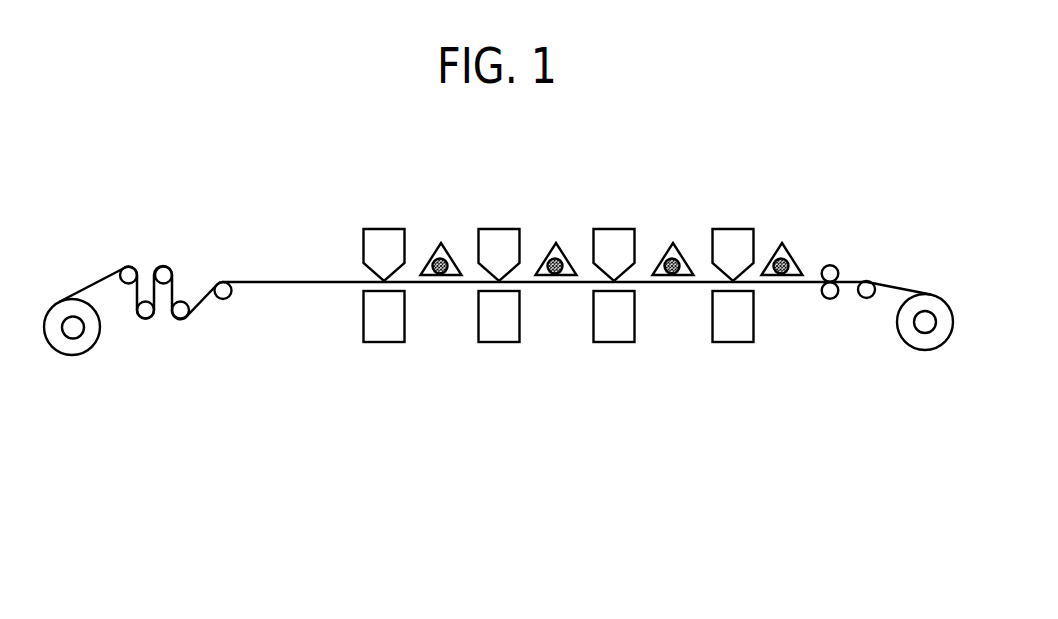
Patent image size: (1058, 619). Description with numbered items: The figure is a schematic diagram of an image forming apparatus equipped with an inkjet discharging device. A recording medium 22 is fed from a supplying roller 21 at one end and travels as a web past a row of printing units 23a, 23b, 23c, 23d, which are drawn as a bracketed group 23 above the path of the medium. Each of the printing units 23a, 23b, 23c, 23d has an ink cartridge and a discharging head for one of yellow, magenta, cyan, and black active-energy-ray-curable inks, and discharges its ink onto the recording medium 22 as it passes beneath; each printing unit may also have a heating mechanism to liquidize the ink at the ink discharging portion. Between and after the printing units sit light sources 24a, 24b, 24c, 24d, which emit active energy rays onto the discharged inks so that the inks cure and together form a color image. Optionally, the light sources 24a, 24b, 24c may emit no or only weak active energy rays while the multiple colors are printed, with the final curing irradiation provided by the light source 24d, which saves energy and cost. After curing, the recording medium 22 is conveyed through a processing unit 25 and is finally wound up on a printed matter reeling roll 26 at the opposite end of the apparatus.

The supplying roller 21 is at (72, 333).
The recording medium 22 is at (272, 280).
The liquid discharge unit group 23 is at (807, 168).
The printing unit 23a is at (385, 237).
The printing unit 23b is at (497, 238).
The printing unit 23c is at (612, 238).
The printing unit 23d is at (731, 238).
The light source 24a is at (447, 252).
The light source 24b is at (562, 252).
The light source 24c is at (679, 252).
The light source 24d is at (788, 252).
The processing unit 25 is at (831, 259).
The printed matter reeling roll 26 is at (925, 333).